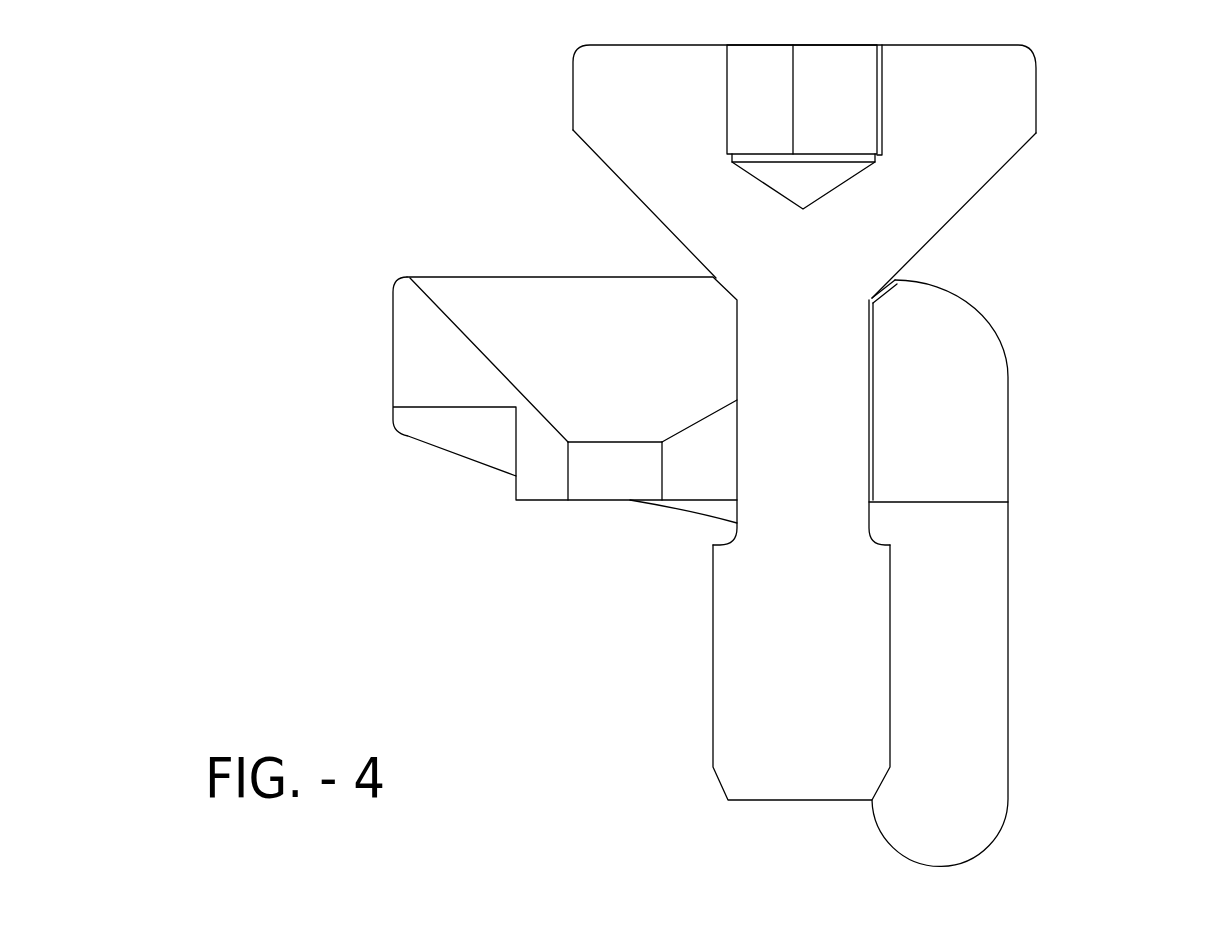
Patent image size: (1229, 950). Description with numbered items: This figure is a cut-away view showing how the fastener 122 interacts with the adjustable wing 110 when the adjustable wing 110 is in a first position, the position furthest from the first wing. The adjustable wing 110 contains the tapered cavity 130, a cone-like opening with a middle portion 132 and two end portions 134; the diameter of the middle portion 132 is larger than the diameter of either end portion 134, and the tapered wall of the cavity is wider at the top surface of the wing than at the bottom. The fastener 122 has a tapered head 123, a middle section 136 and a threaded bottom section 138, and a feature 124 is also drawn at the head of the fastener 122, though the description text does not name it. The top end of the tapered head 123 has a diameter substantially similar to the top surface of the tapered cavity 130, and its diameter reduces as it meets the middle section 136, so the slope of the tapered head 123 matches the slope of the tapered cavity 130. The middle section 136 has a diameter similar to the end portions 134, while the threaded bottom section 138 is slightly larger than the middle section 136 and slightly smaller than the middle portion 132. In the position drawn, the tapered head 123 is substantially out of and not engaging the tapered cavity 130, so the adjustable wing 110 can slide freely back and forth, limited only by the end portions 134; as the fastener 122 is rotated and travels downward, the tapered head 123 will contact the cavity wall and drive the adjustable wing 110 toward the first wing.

The adjustable wing 110 is at (985, 430).
The fastener 122 is at (975, 180).
The tapered head 123 is at (900, 230).
The bore 124 is at (833, 79).
The tapered cavity 130 is at (538, 307).
The middle portion 132 is at (685, 483).
The end portions 134 is at (597, 482).
The middle section 136 is at (837, 370).
The threaded bottom section 138 is at (750, 705).